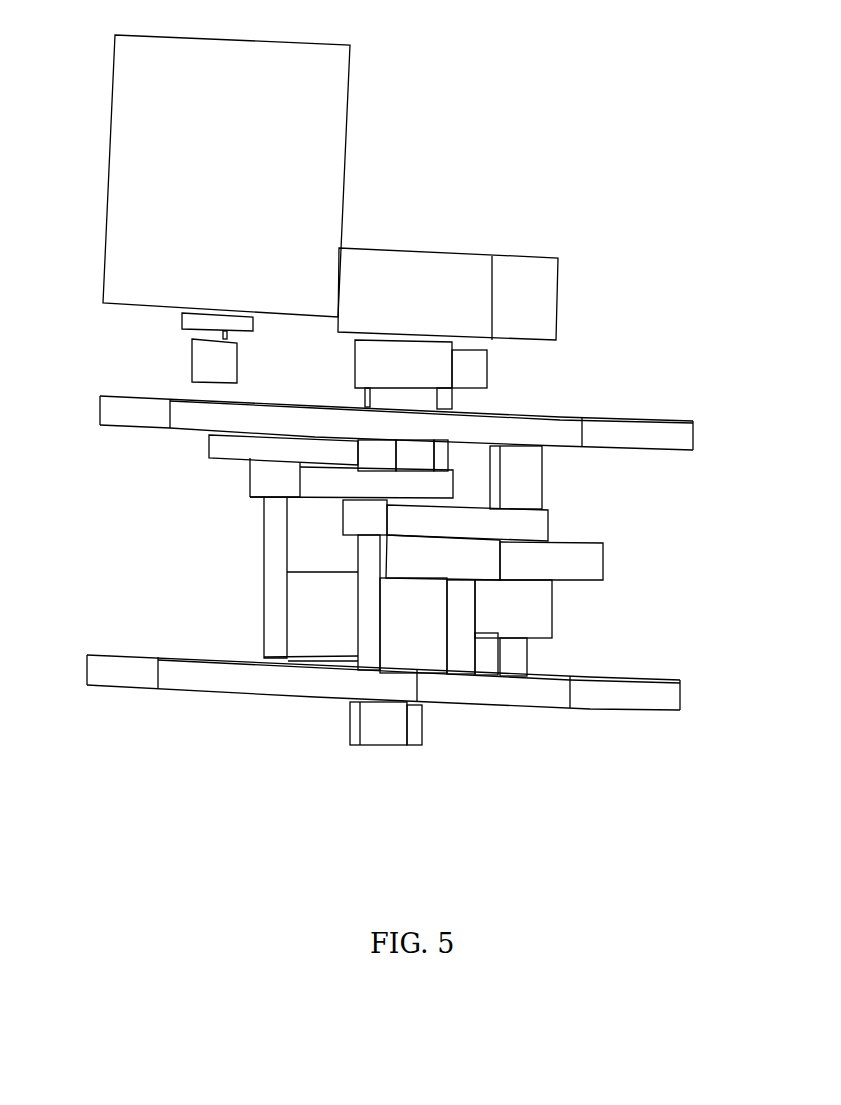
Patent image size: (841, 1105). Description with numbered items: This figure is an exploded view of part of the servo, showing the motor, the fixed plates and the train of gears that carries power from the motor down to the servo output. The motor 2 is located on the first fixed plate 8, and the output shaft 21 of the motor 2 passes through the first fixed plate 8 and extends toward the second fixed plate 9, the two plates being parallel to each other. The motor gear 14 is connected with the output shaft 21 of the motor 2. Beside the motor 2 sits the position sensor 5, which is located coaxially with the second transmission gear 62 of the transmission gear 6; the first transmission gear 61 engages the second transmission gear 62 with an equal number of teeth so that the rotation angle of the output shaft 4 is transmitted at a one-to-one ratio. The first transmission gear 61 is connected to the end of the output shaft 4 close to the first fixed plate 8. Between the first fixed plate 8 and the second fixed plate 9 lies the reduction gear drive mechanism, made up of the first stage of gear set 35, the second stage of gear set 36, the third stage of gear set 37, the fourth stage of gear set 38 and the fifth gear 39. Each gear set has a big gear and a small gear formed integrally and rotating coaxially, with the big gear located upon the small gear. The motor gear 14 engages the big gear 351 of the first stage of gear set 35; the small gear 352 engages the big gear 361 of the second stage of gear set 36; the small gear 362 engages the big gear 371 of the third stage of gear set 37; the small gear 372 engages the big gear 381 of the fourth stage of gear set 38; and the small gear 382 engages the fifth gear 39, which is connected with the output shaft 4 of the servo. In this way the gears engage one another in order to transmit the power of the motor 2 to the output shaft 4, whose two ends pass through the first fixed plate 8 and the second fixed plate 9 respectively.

The motor 2 is at (137, 219).
The output shaft of the motor 21 is at (182, 331).
The motor gear 14 is at (192, 366).
The position sensor 5 is at (448, 275).
The transmission gear 6 is at (522, 366).
The first transmission gear 61 is at (407, 370).
The second transmission gear 62 is at (483, 363).
The first fixed plate 8 is at (677, 433).
The second fixed plate 9 is at (670, 699).
The first stage of gear set 35 is at (227, 492).
The big gear of the first stage of gear set 351 is at (237, 448).
The small gear of the first stage of gear set 352 is at (262, 478).
The second stage of gear set 36 is at (290, 534).
The big gear of the second stage of gear set 361 is at (333, 483).
The small gear of the second stage of gear set 362 is at (362, 522).
The third stage of gear set 37 is at (553, 513).
The big gear of the third stage of gear set 371 is at (546, 514).
The small gear of the third stage of gear set 372 is at (472, 560).
The fourth stage of gear set 38 is at (609, 598).
The big gear of the fourth stage of gear set 381 is at (593, 578).
The small gear of the fourth stage of gear set 382 is at (532, 610).
The fifth gear 39 is at (318, 618).
The output shaft 4 is at (412, 722).